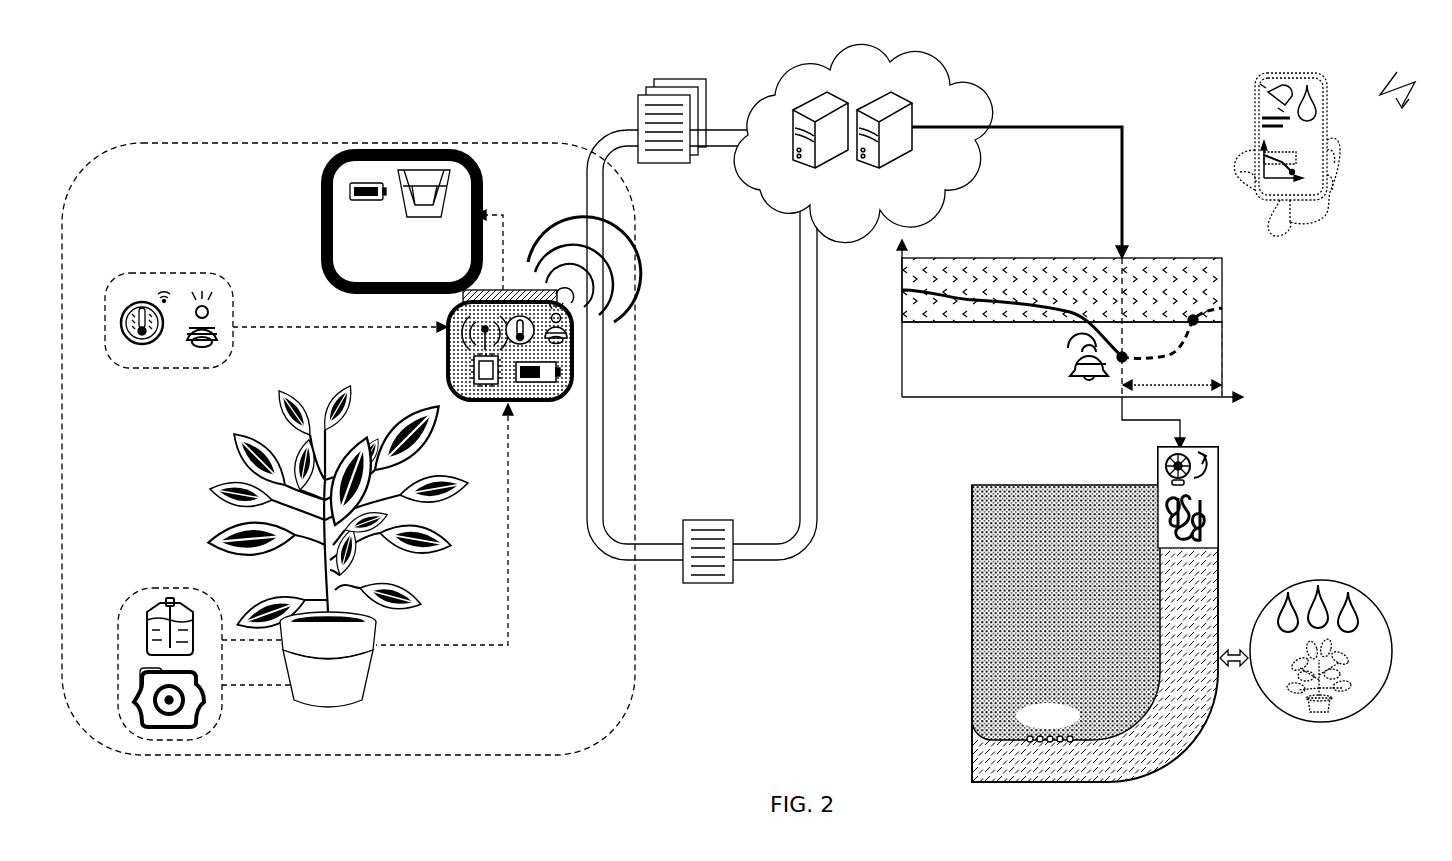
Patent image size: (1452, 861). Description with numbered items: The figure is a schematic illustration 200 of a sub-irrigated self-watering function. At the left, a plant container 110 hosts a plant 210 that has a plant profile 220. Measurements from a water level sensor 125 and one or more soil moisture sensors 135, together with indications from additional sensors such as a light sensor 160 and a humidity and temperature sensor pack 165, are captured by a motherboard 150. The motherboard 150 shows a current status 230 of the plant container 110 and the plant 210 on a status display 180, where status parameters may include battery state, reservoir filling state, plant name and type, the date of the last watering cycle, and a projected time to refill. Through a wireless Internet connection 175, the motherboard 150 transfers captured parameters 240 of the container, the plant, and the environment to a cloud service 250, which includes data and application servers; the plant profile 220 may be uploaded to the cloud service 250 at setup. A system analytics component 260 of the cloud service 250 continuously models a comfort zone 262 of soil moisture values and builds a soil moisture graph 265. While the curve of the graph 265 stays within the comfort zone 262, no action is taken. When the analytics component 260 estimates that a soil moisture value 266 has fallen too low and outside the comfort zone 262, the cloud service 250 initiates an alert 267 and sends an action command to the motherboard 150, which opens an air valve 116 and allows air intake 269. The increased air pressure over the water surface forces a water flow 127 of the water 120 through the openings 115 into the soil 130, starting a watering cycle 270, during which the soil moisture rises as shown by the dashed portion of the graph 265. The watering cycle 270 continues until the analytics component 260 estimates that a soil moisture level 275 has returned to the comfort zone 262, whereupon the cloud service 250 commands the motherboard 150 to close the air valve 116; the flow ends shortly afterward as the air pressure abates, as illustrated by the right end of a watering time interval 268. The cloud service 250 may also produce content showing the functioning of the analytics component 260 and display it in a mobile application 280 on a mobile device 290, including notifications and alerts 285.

The plant container 110 is at (342, 694).
The openings 115 is at (1109, 607).
The air valve 116 is at (1222, 467).
The water 120 is at (1202, 667).
The water level sensor 125 is at (140, 678).
The water flow 127 is at (1062, 724).
The soil 130 is at (1062, 601).
The soil moisture sensors 135 is at (155, 603).
The motherboard 150 is at (577, 343).
The light sensor 160 is at (205, 310).
The humidity and temperature sensor pack 165 is at (142, 298).
The wireless Internet connection 175 is at (610, 257).
The status display 180 is at (400, 156).
The schematic illustration 200 is at (1397, 78).
The plant 210 is at (228, 454).
The plant profile 220 is at (708, 519).
The current status 230 is at (345, 208).
The captured parameters 240 is at (637, 122).
The cloud service 250 is at (915, 110).
The system analytics component 260 is at (1087, 339).
The comfort zone 262 is at (1062, 285).
The soil moisture graph 265 is at (902, 322).
The soil moisture value 266 is at (1124, 352).
The alert 267 is at (1064, 347).
The watering time interval 268 is at (1156, 390).
The air intake 269 is at (1220, 517).
The watering cycle 270 is at (1320, 580).
The soil moisture level 275 is at (1222, 320).
The mobile application 280 is at (1268, 138).
The notifications and alerts 285 is at (1260, 96).
The mobile device 290 is at (1283, 144).